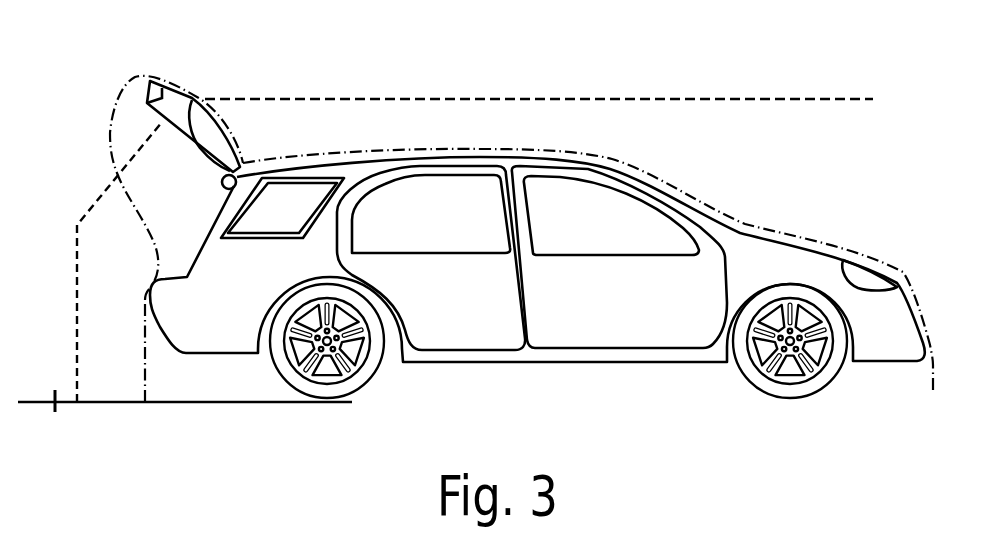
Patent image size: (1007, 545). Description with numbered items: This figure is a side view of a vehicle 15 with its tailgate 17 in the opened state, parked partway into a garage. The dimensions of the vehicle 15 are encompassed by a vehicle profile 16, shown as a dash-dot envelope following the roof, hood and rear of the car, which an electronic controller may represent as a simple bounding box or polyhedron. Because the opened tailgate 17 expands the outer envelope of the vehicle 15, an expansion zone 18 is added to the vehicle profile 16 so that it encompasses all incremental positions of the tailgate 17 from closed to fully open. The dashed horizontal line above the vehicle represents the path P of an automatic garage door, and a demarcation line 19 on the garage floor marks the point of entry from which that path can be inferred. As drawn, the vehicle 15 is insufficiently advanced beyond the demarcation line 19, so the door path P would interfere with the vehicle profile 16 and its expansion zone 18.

The vehicle 15 is at (478, 378).
The vehicle profile 16 is at (145, 376).
The tailgate 17 is at (191, 138).
The expansion zone 18 is at (118, 97).
The demarcation line 19 is at (55, 406).
The path P is at (392, 99).